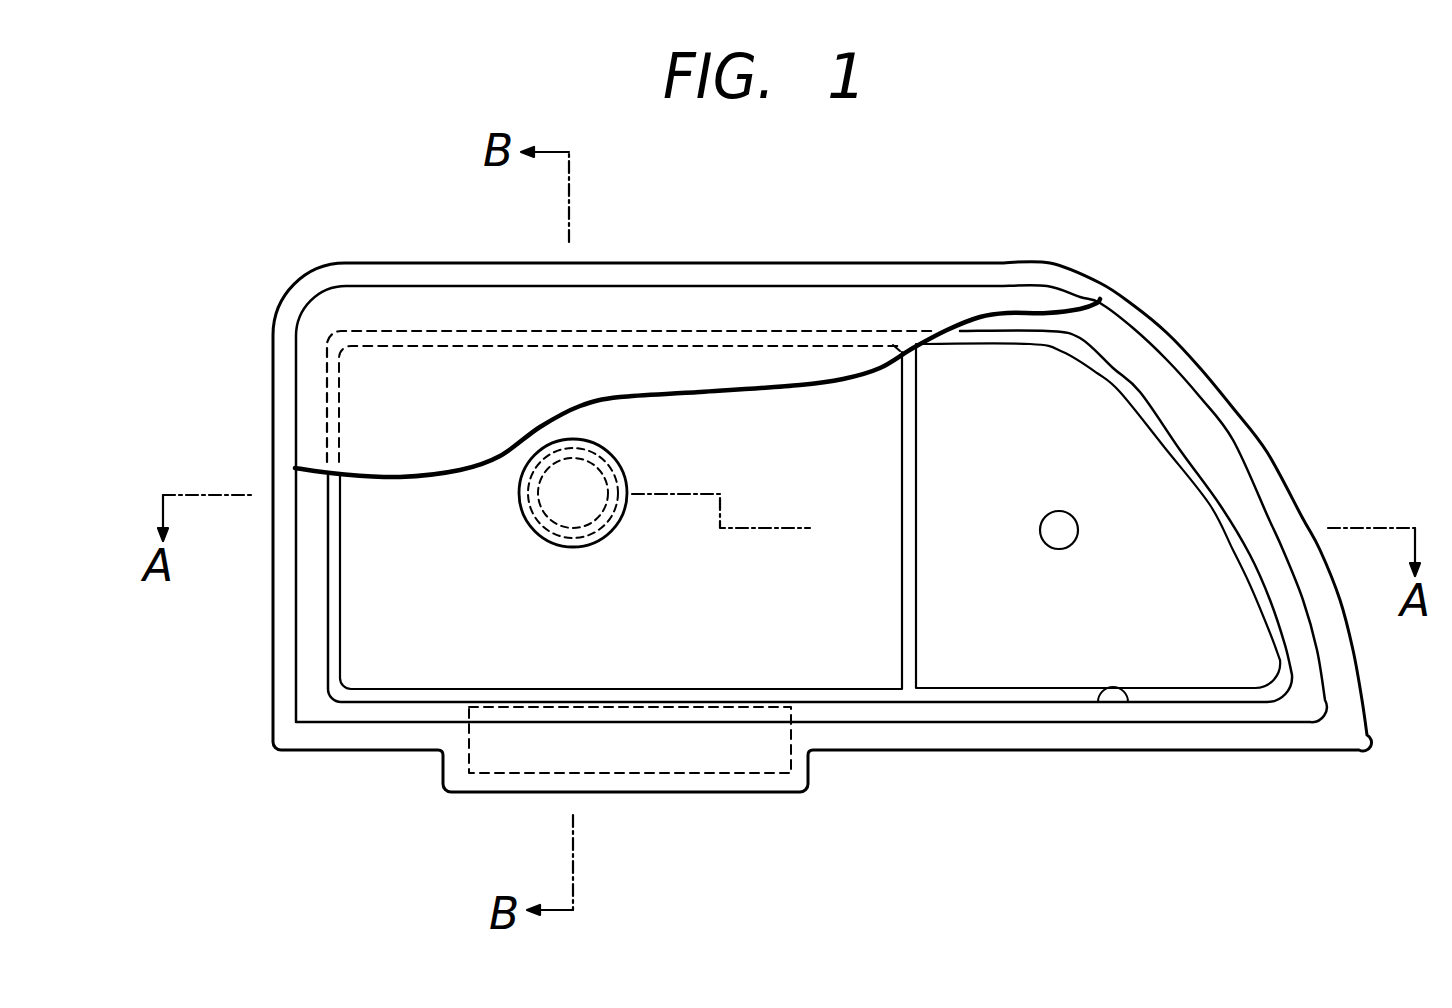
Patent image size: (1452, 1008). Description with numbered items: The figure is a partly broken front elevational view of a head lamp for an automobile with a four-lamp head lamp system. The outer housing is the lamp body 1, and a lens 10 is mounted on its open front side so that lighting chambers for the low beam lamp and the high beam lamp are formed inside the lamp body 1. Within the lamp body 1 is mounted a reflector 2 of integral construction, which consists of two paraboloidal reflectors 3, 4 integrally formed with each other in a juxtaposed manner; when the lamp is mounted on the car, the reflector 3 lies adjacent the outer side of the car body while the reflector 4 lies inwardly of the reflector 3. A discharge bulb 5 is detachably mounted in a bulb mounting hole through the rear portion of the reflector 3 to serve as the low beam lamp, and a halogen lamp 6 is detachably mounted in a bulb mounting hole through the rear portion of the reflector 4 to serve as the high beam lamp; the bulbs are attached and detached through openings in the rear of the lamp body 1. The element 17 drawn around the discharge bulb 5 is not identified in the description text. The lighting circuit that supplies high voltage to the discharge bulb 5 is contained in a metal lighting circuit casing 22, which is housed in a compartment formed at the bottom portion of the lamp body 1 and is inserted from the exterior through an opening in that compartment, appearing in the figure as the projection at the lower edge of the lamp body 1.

The lamp body 1 is at (1093, 282).
The reflector 2 is at (1186, 418).
The reflector 3 is at (340, 545).
The reflector 4 is at (1192, 497).
The discharge bulb 5 is at (577, 508).
The halogen lamp 6 is at (1059, 530).
The lens 10 is at (647, 286).
The socket 17 is at (615, 457).
The lighting circuit casing 22 is at (808, 777).